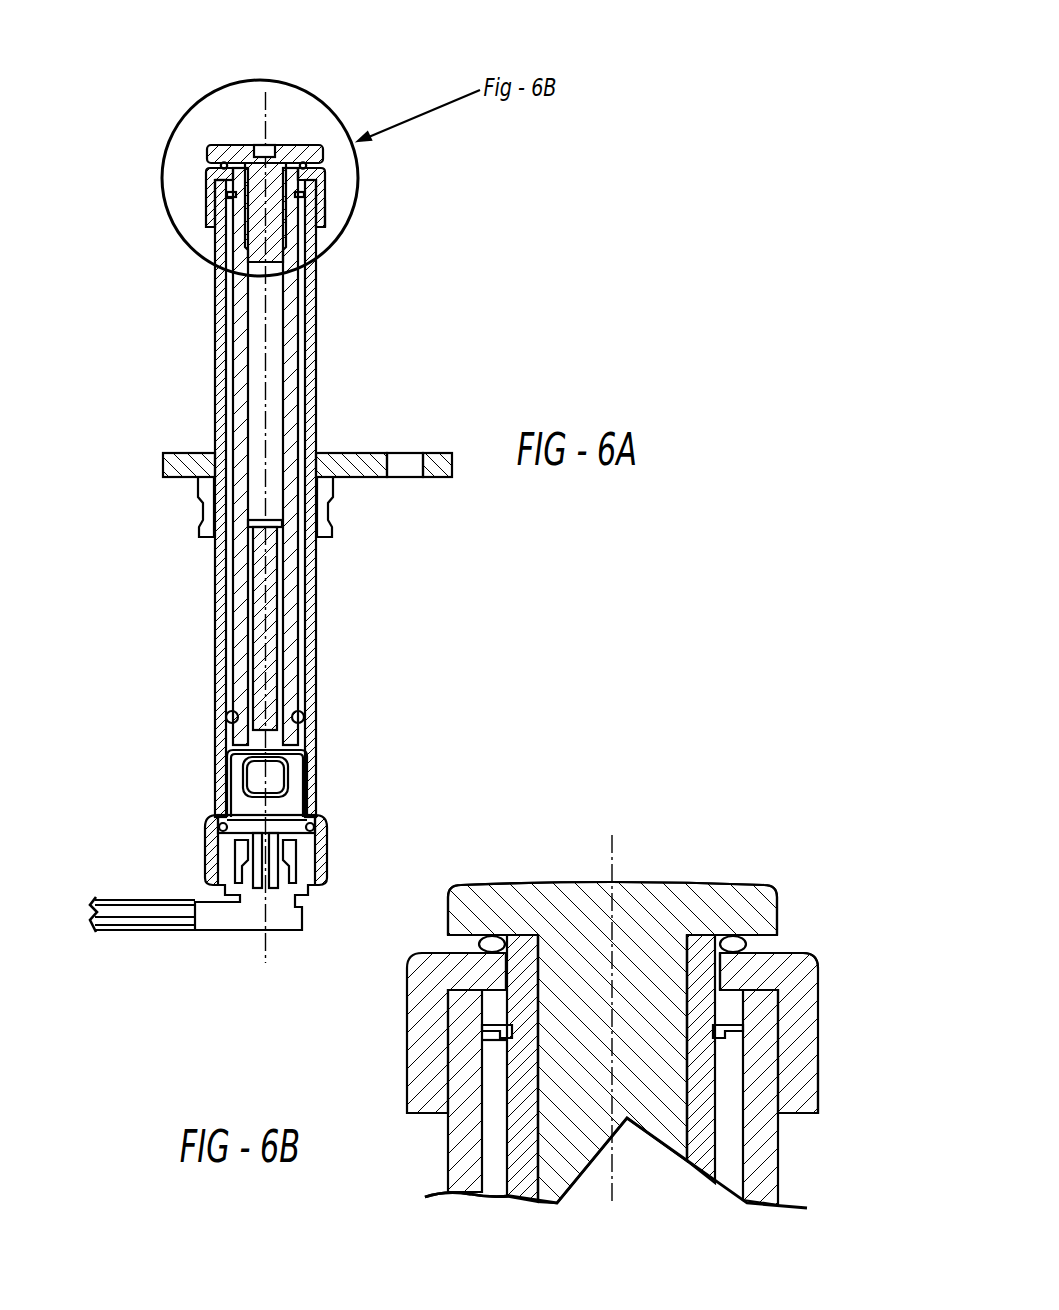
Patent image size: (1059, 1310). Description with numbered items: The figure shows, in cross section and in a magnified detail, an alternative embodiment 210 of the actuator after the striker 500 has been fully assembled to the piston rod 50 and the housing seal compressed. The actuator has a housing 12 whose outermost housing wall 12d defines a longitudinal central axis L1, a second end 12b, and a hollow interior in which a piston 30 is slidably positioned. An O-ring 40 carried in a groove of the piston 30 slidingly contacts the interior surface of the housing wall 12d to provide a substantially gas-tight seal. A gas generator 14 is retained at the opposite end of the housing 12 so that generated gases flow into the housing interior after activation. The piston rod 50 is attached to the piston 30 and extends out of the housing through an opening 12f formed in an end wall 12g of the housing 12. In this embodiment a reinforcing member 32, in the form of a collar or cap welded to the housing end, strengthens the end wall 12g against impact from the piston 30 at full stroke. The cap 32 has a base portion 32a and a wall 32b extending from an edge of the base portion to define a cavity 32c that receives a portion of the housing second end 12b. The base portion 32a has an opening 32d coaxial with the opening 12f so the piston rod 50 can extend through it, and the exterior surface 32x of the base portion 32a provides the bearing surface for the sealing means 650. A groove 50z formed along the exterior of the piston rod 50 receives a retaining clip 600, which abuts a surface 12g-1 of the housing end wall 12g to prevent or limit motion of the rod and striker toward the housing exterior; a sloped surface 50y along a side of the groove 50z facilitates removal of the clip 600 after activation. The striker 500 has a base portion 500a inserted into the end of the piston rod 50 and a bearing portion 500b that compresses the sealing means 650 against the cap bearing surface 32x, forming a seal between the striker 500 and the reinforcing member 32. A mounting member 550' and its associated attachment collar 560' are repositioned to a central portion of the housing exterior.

In FIG. 6A, the longitudinal central axis L1 is at (263, 108).
In FIG. 6B, the longitudinal central axis L1 is at (610, 798).
In FIG. 6A, the housing 12 is at (220, 376).
In FIG. 6B, the second end 12b is at (463, 1078).
In FIG. 6B, the outermost housing wall 12d is at (450, 1165).
In FIG. 6B, the opening 12f is at (518, 935).
In FIG. 6B, the end wall 12g is at (500, 1007).
In FIG. 6B, the surface of housing end wall 12g-1 is at (497, 1030).
In FIG. 6A, the gas generator 14 is at (237, 800).
In FIG. 6A, the piston 30 is at (238, 738).
In FIG. 6B, the reinforcing member 32 is at (782, 967).
In FIG. 6A, the base portion 32a is at (320, 175).
In FIG. 6B, the base portion 32a is at (767, 978).
In FIG. 6A, the wall 32b is at (323, 207).
In FIG. 6B, the wall 32b is at (805, 1095).
In FIG. 6A, the cavity 32c is at (230, 175).
In FIG. 6B, the cavity 32c is at (443, 993).
In FIG. 6A, the opening 32d is at (296, 176).
In FIG. 6B, the opening 32d is at (505, 973).
In FIG. 6A, the exterior surface 32x is at (233, 174).
In FIG. 6A, the O-ring 40 is at (231, 718).
In FIG. 6A, the piston rod 50 is at (235, 399).
In FIG. 6B, the piston rod 50 is at (702, 1072).
In FIG. 6B, the sloped surface 50y is at (700, 1072).
In FIG. 6A, the groove 50z is at (318, 196).
In FIG. 6B, the groove 50z is at (705, 1032).
In FIG. 6A, the alternative embodiment of the actuator 210 is at (427, 667).
In FIG. 6B, the striker 500 is at (630, 890).
In FIG. 6A, the base portion 500a is at (266, 218).
In FIG. 6B, the base portion 500a is at (635, 1068).
In FIG. 6A, the bearing portion 500b is at (323, 145).
In FIG. 6B, the bearing portion 500b is at (755, 902).
In FIG. 6A, the mounting member 550' is at (250, 513).
In FIG. 6A, the attachment collar 560' is at (199, 563).
In FIG. 6A, the retaining clip 600 is at (233, 196).
In FIG. 6B, the retaining clip 600 is at (490, 1040).
In FIG. 6A, the sealing means 650 is at (223, 162).
In FIG. 6B, the sealing means 650 is at (480, 945).